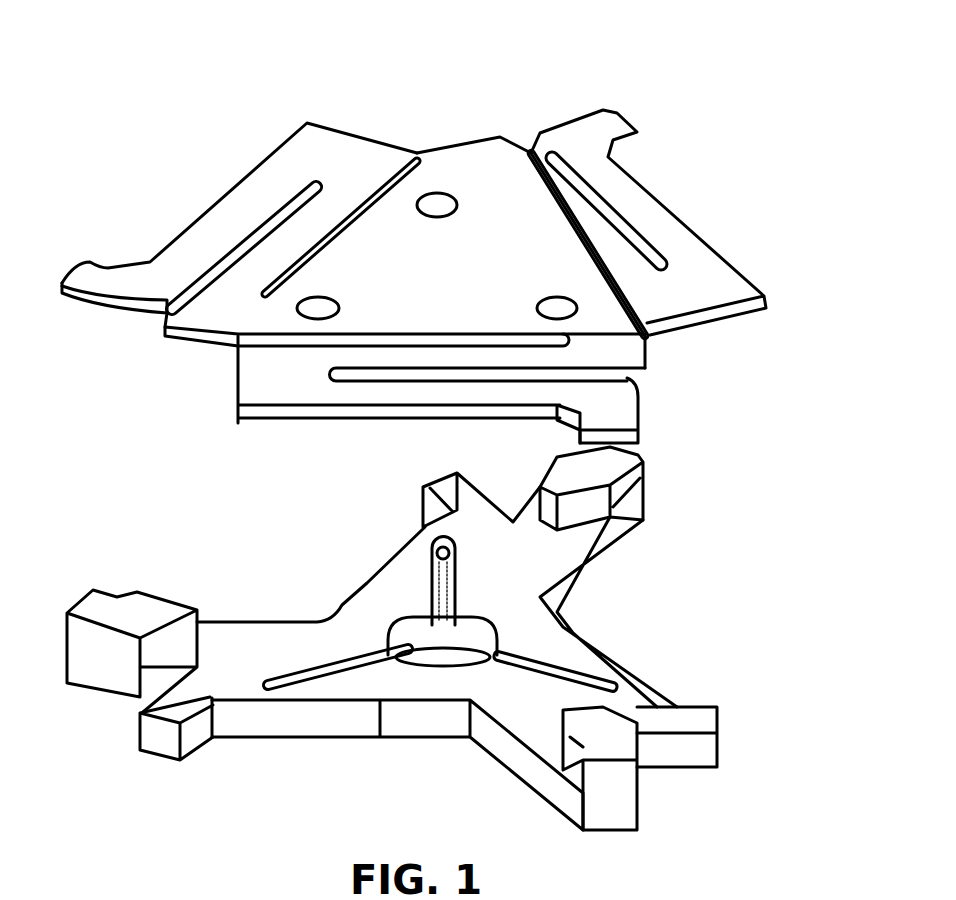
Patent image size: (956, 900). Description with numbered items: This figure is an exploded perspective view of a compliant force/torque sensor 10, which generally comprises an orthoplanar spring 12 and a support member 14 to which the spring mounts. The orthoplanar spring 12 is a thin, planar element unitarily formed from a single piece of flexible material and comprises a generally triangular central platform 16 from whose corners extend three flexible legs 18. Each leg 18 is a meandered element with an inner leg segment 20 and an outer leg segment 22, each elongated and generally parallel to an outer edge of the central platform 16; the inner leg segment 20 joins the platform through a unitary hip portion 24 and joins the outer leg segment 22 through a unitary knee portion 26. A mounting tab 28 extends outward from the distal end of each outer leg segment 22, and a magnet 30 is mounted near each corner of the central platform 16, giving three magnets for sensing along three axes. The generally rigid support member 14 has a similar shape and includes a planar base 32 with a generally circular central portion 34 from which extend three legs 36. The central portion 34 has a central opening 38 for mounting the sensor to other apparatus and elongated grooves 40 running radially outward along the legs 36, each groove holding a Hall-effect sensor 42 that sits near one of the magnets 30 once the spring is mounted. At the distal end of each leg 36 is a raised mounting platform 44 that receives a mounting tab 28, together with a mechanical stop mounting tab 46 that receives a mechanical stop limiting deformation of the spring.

The compliant force/torque sensor 10 is at (787, 70).
The orthoplanar spring 12 is at (437, 268).
The support member 14 is at (422, 630).
The central platform 16 is at (427, 278).
The flexible legs 18 is at (202, 204).
The inner leg segment 20 is at (313, 226).
The outer leg segment 22 is at (253, 182).
The hip portion 24 is at (457, 167).
The knee portion 26 is at (347, 147).
The mounting tab 28 is at (98, 273).
The magnet 30 is at (437, 217).
The base 32 is at (328, 590).
The central portion 34 is at (553, 623).
The legs 36 is at (398, 544).
The central opening 38 is at (467, 627).
The elongated grooves 40 is at (427, 585).
The Hall-effect sensor 42 is at (450, 557).
The raised mounting platform 44 is at (108, 600).
The mechanical stop mounting tab 46 is at (443, 483).